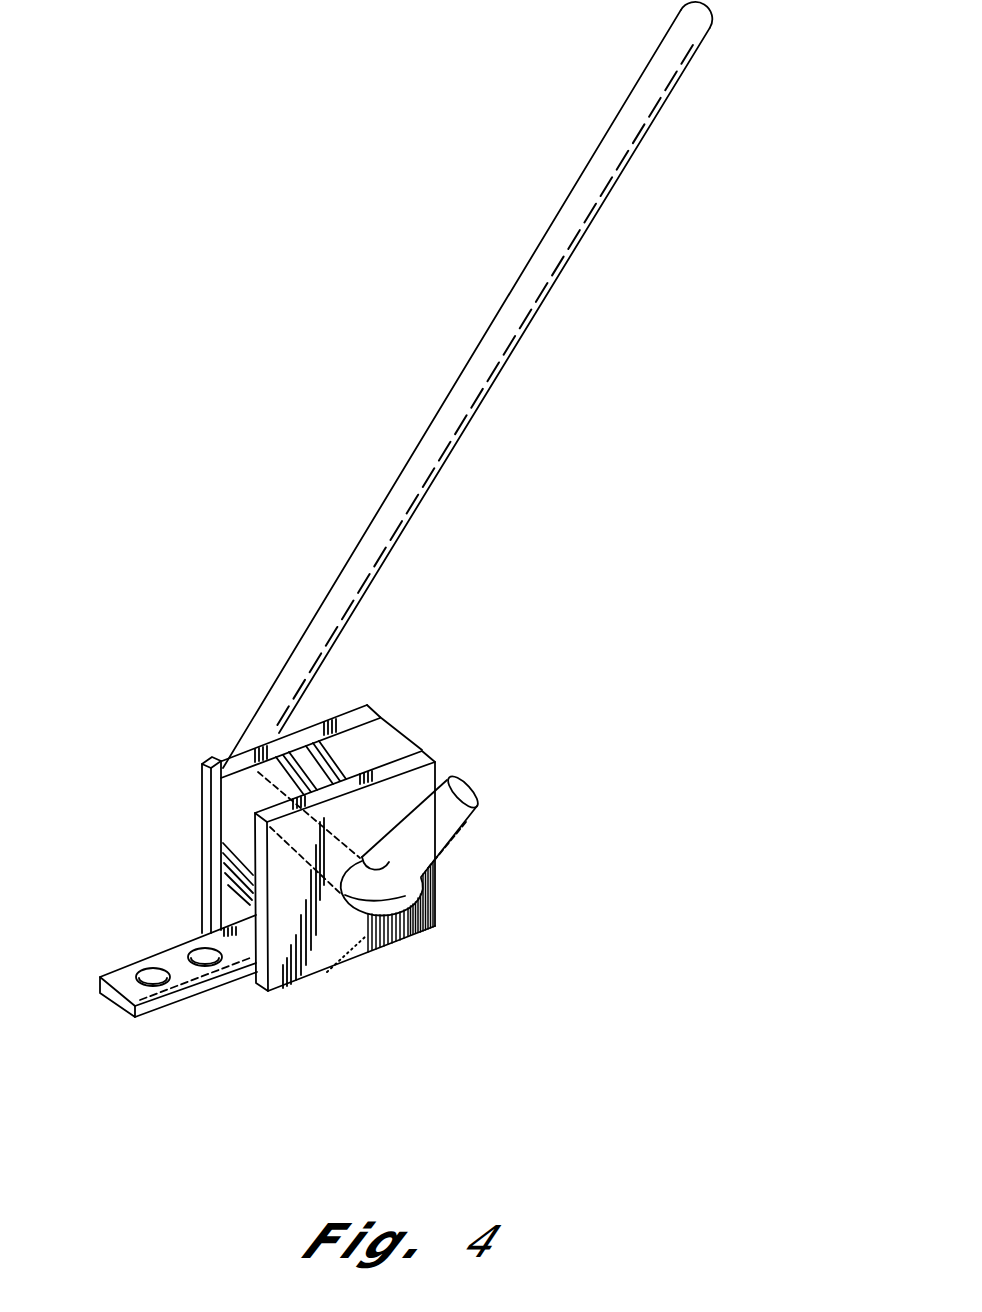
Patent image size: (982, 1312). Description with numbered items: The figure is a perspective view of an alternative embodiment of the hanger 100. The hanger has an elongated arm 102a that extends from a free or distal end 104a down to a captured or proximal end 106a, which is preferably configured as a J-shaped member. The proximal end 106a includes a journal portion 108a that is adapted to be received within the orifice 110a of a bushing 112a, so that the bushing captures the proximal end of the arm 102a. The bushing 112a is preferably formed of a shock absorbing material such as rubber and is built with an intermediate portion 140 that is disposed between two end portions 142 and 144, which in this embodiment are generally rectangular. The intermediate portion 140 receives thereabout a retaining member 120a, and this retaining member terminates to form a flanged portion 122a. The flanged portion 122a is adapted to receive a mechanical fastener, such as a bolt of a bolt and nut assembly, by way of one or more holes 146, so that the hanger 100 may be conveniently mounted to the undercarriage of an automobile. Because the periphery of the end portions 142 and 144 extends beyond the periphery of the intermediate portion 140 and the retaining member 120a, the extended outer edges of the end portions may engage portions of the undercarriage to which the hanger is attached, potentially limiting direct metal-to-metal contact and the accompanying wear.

The hanger 100 is at (319, 312).
The arm 102a is at (510, 320).
The distal end 104a is at (701, 103).
The proximal end 106a is at (535, 746).
The journal portion 108a is at (249, 803).
The orifice 110a is at (402, 940).
The bushing 112a is at (313, 960).
The retaining member 120a is at (383, 745).
The flanged portion 122a is at (172, 959).
The intermediate portion 140 is at (445, 708).
The end portion 142 is at (435, 924).
The end portion 144 is at (206, 766).
The holes 146 is at (163, 983).